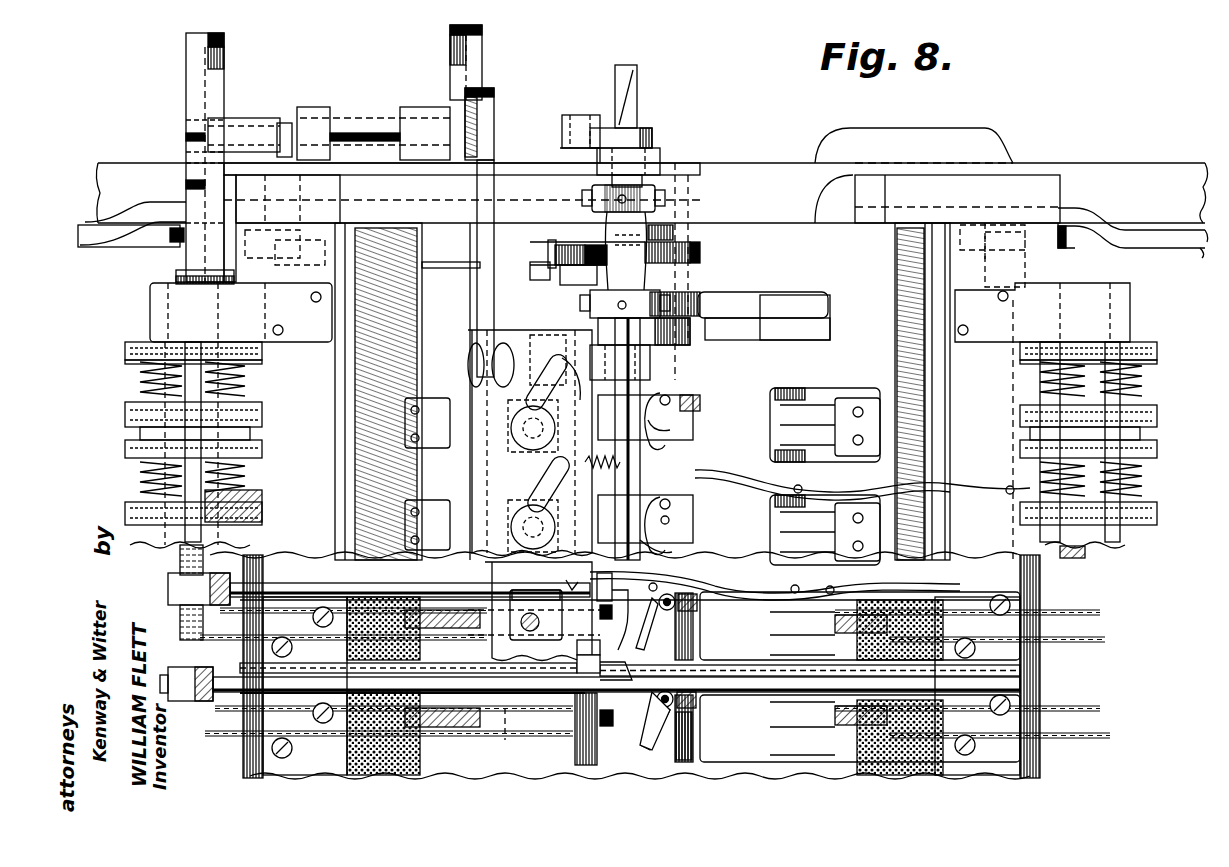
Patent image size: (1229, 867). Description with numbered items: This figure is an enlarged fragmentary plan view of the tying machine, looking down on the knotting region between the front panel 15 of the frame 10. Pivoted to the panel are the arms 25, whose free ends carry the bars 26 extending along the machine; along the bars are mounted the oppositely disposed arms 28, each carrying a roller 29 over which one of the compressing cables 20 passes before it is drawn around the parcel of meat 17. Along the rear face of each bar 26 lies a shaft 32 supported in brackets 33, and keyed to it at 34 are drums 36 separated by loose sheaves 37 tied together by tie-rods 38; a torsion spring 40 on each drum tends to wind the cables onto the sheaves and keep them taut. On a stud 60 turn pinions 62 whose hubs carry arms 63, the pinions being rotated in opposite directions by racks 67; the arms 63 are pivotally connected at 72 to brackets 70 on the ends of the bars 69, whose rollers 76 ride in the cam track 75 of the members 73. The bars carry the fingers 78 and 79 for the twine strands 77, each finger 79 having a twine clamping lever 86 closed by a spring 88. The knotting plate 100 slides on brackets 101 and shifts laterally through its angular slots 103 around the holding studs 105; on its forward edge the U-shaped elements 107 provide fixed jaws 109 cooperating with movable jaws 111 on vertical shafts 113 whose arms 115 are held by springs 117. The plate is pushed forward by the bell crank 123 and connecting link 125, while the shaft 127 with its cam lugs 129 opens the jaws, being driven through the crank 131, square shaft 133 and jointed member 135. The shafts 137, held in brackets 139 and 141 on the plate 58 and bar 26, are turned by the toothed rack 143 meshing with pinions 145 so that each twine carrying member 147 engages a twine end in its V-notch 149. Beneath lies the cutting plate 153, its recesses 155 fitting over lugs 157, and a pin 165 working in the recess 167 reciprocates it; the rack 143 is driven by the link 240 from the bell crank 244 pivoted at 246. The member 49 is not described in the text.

The frame 10 is at (1188, 176).
The front panel 15 is at (1102, 173).
The parcel of meat 17 is at (1042, 777).
The cables 20 is at (126, 416).
The arms 25 is at (342, 175).
The bars 26 is at (1088, 264).
The arms 28 is at (850, 732).
The roller 29 is at (814, 476).
The shaft 32 is at (157, 280).
The brackets 33 is at (150, 299).
The key 34 is at (248, 381).
The drums 36 is at (143, 371).
The sheaves 37 is at (126, 433).
The tie-rods 38 is at (245, 472).
The torsion spring 40 is at (132, 474).
The bar 49 is at (110, 243).
The plate 58 is at (782, 620).
The stud 60 is at (684, 178).
The pinions 62 is at (695, 295).
The arms 63 is at (820, 350).
The racks 67 is at (566, 248).
The bars 69 is at (306, 765).
The brackets 70 is at (449, 264).
The pivot 72 is at (805, 293).
The members 73 is at (166, 233).
The cam track 75 is at (996, 215).
The rollers 76 is at (280, 252).
The twine strands 77 is at (326, 559).
The fingers 78 is at (400, 662).
The fingers 79 is at (1042, 594).
The twine clamping lever 86 is at (705, 487).
The spring 88 is at (757, 590).
The plate 100 is at (578, 542).
The brackets 101 is at (449, 562).
The angularly arranged slots 103 is at (568, 472).
The holding studs 105 is at (527, 521).
The U-shaped elements 107 is at (682, 523).
The fixed twine holding jaw 109 is at (644, 742).
The movable jaw 111 is at (670, 762).
The vertical shaft 113 is at (675, 403).
The arm 115 is at (668, 541).
The springs 117 is at (601, 477).
The bell crank 123 is at (478, 71).
The connecting link 125 is at (495, 181).
The shaft 127 is at (652, 352).
The cam lugs 129 is at (660, 432).
The crank 131 is at (650, 130).
The square shaft 133 is at (640, 97).
The member 135 is at (640, 252).
The shafts 137 is at (502, 714).
The brackets 139 is at (580, 694).
The brackets 141 is at (188, 703).
The toothed rack 143 is at (181, 557).
The pinions 145 is at (182, 606).
The twine carrying member 147 is at (611, 722).
The V-notch 149 is at (620, 614).
The plate 153 is at (534, 611).
The recesses 155 is at (580, 589).
The lugs 157 is at (536, 615).
The pin 165 is at (564, 345).
The recess 167 is at (567, 367).
The link 240 is at (220, 212).
The bell crank 244 is at (204, 88).
The pivot 246 is at (248, 122).